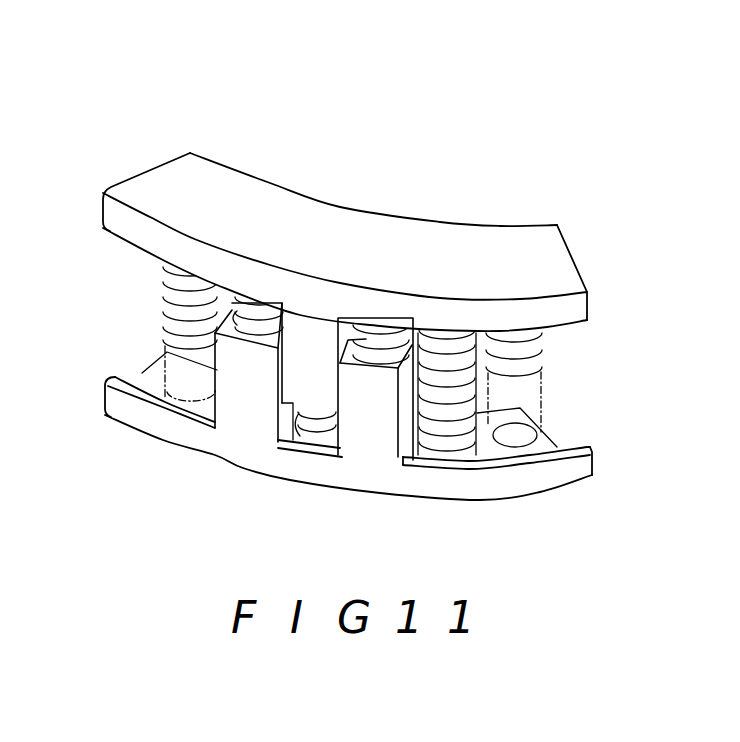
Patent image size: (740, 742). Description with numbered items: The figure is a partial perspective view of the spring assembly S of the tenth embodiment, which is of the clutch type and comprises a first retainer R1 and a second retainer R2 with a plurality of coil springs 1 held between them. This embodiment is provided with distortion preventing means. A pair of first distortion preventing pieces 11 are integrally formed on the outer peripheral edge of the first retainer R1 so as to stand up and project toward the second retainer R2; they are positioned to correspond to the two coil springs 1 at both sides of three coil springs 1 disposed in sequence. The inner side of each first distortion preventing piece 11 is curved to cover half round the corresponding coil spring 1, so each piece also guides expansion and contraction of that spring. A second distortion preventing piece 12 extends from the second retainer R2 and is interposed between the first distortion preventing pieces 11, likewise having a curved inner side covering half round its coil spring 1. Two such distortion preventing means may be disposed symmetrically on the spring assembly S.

The spring assembly S is at (345, 205).
The second retainer R2 is at (508, 157).
The first retainer R1 is at (113, 400).
The coil spring 1 is at (163, 292).
The first distortion preventing piece 11 is at (247, 413).
The second distortion preventing piece 12 is at (305, 392).